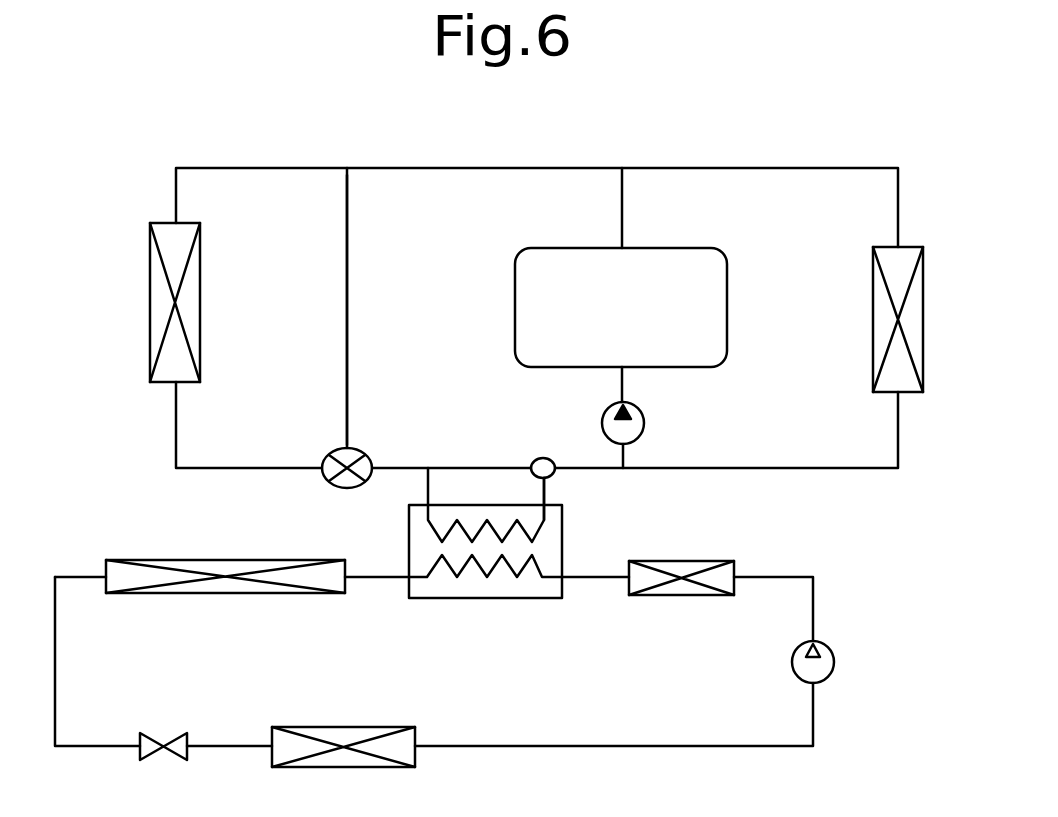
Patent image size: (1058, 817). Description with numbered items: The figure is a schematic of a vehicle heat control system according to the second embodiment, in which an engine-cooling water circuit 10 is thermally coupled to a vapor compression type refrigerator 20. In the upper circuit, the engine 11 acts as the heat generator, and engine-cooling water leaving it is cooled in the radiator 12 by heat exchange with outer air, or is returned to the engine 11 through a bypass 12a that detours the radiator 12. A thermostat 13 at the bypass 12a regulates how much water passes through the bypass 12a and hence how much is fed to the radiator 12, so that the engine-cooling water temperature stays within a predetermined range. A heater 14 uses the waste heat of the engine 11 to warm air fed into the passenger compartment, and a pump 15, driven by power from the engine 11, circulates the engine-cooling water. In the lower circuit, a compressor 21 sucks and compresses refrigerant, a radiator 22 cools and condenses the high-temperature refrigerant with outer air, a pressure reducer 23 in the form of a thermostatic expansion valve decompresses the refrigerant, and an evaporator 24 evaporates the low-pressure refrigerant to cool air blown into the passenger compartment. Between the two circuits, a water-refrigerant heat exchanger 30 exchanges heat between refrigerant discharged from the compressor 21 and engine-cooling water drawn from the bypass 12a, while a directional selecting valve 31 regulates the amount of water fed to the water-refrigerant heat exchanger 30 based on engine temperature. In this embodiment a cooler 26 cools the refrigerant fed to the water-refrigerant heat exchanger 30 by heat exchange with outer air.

The engine-cooling water circuit 10 is at (706, 160).
The engine 11 is at (728, 306).
The radiator 12 is at (150, 309).
The bypass 12a is at (349, 302).
The thermostat 13 is at (360, 452).
The heater 14 is at (908, 246).
The pump 15 is at (645, 420).
The vapor compression type refrigerator 20 is at (828, 590).
The compressor 21 is at (835, 655).
The radiator 22 is at (253, 560).
The pressure reducer 23 is at (172, 758).
The evaporator 24 is at (340, 768).
The cooler 26 is at (715, 561).
The water-refrigerant heat exchanger 30 is at (580, 528).
The directional selecting valve 31 is at (543, 458).